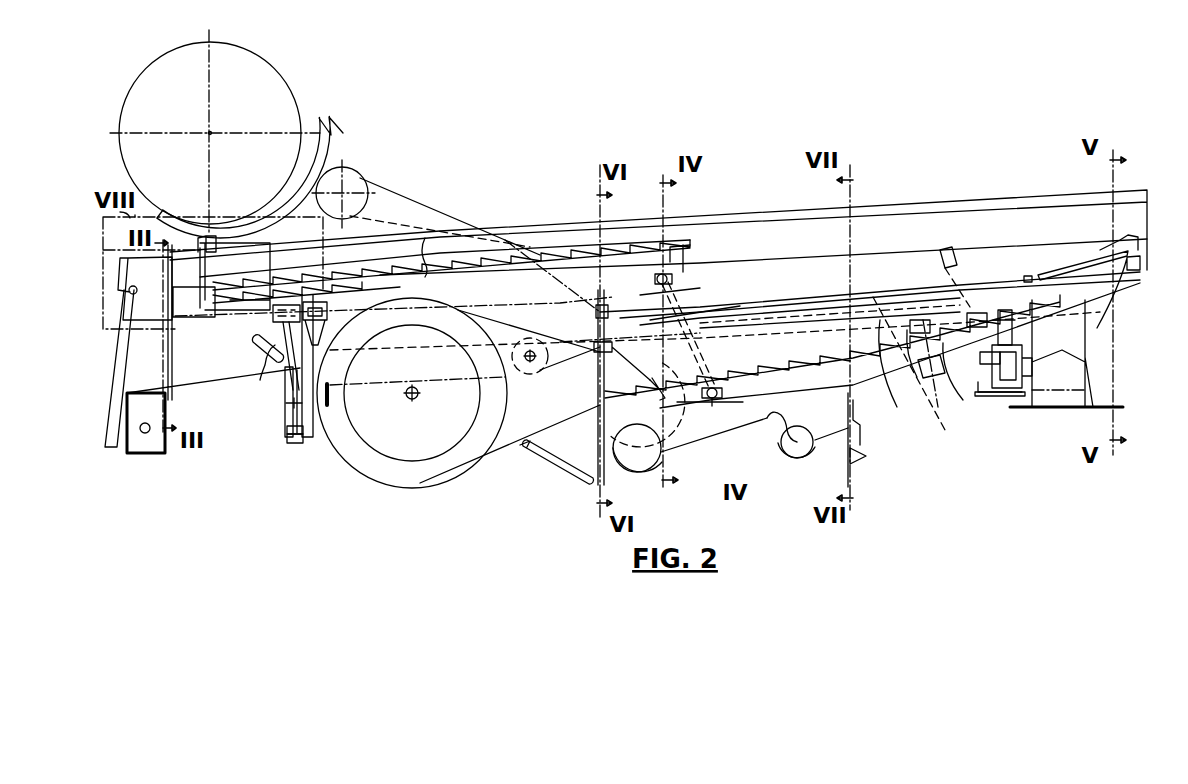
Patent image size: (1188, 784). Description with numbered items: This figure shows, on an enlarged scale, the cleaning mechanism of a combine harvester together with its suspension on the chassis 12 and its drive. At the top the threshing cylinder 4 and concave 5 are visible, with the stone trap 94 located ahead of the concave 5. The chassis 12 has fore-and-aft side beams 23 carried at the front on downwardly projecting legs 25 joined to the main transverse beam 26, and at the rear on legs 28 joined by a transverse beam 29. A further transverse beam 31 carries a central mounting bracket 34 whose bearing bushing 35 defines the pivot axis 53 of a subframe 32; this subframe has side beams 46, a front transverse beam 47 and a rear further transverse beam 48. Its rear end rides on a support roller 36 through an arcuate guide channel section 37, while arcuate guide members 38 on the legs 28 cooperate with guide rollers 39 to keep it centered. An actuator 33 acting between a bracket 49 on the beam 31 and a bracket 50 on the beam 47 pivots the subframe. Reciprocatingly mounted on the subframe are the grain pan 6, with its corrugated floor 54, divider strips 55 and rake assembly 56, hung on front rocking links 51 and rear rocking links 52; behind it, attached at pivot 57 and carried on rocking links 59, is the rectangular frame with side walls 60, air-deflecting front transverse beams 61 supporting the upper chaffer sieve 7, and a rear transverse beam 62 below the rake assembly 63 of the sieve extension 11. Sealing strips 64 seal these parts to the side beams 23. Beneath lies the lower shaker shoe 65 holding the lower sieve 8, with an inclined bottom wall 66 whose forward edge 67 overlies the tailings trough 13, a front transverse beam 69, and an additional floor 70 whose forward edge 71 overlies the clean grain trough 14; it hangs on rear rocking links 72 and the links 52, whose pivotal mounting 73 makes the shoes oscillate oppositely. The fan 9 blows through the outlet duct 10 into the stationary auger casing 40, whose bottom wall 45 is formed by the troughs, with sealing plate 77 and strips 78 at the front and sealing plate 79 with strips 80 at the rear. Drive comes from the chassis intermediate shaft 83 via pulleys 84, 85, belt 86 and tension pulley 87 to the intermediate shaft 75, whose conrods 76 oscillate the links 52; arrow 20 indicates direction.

The cylinder 4 is at (289, 67).
The concave 5 is at (334, 160).
The grain pan 6 is at (384, 250).
The upper chaffer sieve 7 is at (876, 296).
The lower sieve 8 is at (922, 369).
The fan 9 is at (337, 457).
The outlet duct 10 is at (502, 452).
The sieve extension 11 is at (1054, 270).
The combine harvester chassis 12 is at (182, 390).
The tailings trough 13 is at (807, 462).
The clean grain trough 14 is at (650, 476).
The direction of travel 20 is at (456, 114).
The side beams 23 is at (752, 215).
The downwardly projecting legs 25 is at (114, 455).
The main transverse beam 26 is at (166, 455).
The downwardly projecting legs 28 is at (1085, 337).
The transverse beam 29 is at (1093, 389).
The further transverse beam 31 is at (276, 381).
The subframe 32 is at (306, 442).
The actuator 33 is at (286, 445).
The central mounting bracket 34 is at (278, 401).
The bearing bushing 35 is at (286, 265).
The support roller 36 is at (1018, 398).
The guide channel section 37 is at (990, 397).
The arcuate guide members 38 is at (1022, 348).
The guide rollers 39 is at (1012, 320).
The auger casing 40 is at (781, 472).
The bottom wall 45 is at (714, 452).
The side beams 46 is at (492, 378).
The transverse beam 47 is at (332, 381).
The further transverse beam 48 is at (972, 370).
The bracket 49 is at (282, 420).
The bracket 50 is at (288, 461).
The front rocking links 51 is at (338, 322).
The rear rocking links 52 is at (678, 283).
The pivot axis 53 is at (256, 328).
The corrugated floor 54 is at (319, 259).
The divider strips 55 is at (680, 260).
The rake assembly 56 is at (707, 270).
The pivotal attachment 57 is at (704, 290).
The rocking links 59 is at (956, 266).
The side walls 60 is at (657, 306).
The front transverse beams 61 is at (608, 312).
The rear transverse beam 62 is at (1140, 262).
The rake assembly 63 is at (1120, 244).
The sealing strips 64 is at (885, 206).
The lower shaker shoe 65 is at (930, 396).
The bottom wall 66 is at (887, 369).
The forward edge 67 is at (823, 423).
The front transverse beam 69 is at (588, 372).
The additional forwardly inclined floor 70 is at (818, 362).
The forward edge 71 is at (698, 400).
The rear rocking links 72 is at (965, 366).
The pivotal mounting 73 is at (742, 338).
The intermediate shaft 75 is at (536, 374).
The conrods 76 is at (648, 405).
The sealing plate 77 is at (598, 497).
The sealing strips 78 is at (580, 472).
The sealing plate 79 is at (866, 453).
The sealing strips 80 is at (860, 422).
The intermediate shaft 83 is at (368, 182).
The pulley 84 is at (420, 201).
The pulley 85 is at (768, 440).
The belt 86 is at (468, 216).
The tension pulley 87 is at (646, 382).
The stone trap 94 is at (150, 322).